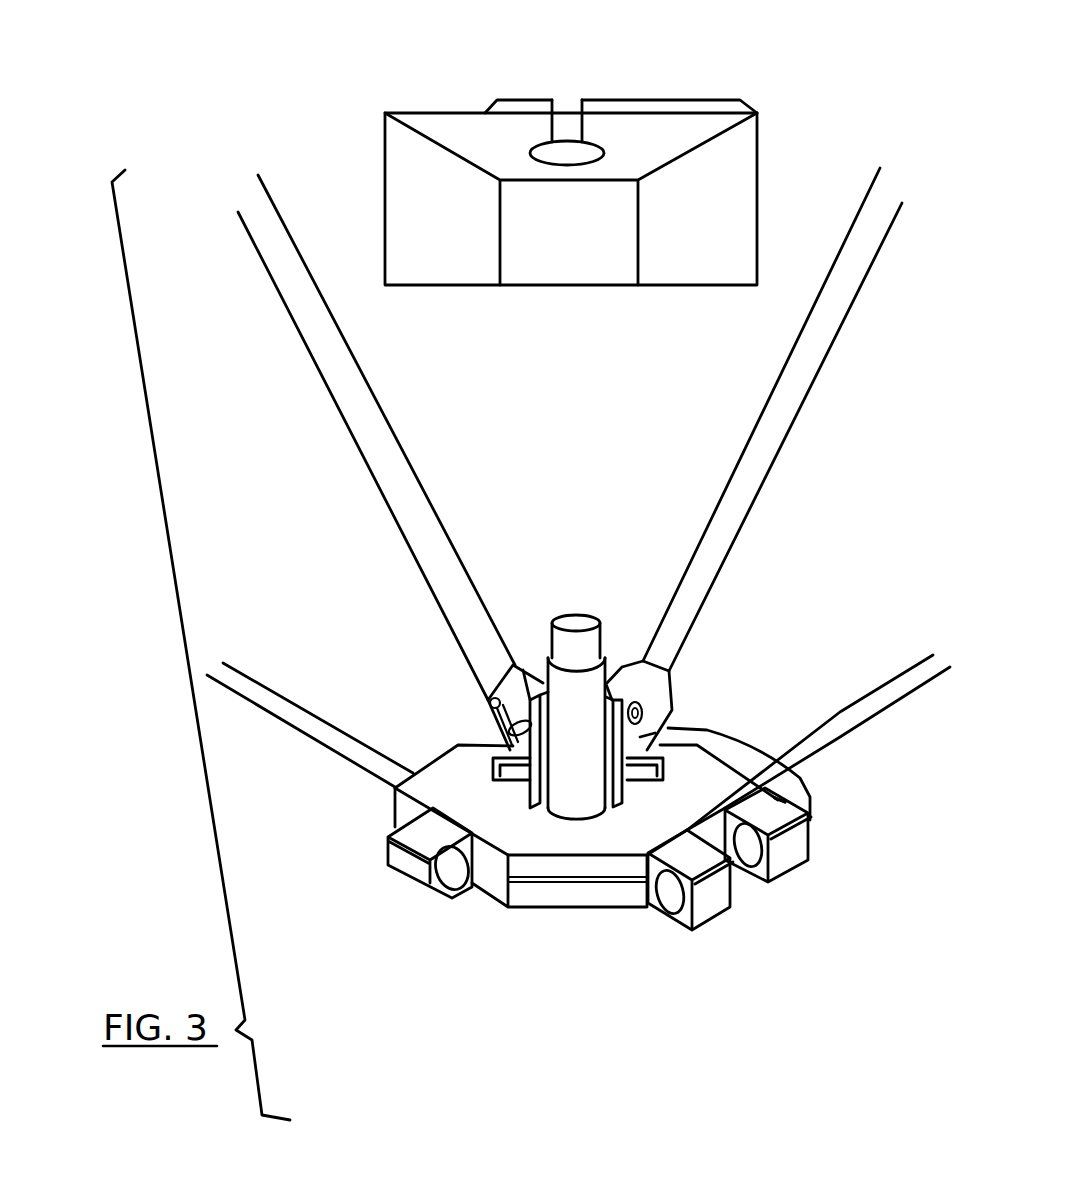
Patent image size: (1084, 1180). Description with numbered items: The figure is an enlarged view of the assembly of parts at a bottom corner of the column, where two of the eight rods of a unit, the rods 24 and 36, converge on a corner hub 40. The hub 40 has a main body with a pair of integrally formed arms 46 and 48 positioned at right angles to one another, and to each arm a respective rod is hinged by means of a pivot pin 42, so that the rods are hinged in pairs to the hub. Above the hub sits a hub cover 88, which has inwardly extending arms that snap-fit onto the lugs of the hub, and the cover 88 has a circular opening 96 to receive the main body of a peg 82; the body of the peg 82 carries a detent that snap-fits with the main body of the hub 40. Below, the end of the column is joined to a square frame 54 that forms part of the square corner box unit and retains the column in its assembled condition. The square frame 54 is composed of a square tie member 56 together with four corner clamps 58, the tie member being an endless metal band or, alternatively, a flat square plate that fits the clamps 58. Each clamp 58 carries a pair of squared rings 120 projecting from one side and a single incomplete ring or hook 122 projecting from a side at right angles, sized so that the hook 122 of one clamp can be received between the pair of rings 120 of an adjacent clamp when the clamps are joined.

The rod 24 is at (407, 503).
The rod 36 is at (753, 470).
The corner hub 40 is at (783, 770).
The pivot pin 42 is at (490, 702).
The arm 46 is at (625, 682).
The arm 48 is at (532, 692).
The square frame 54 is at (384, 787).
The square tie member 56 is at (282, 705).
The corner clamp 58 is at (498, 885).
The peg 82 is at (575, 757).
The hub cover 88 is at (460, 130).
The circular opening 96 is at (558, 160).
The squared ring 120 is at (708, 907).
The incomplete ring or hook 122 is at (410, 860).